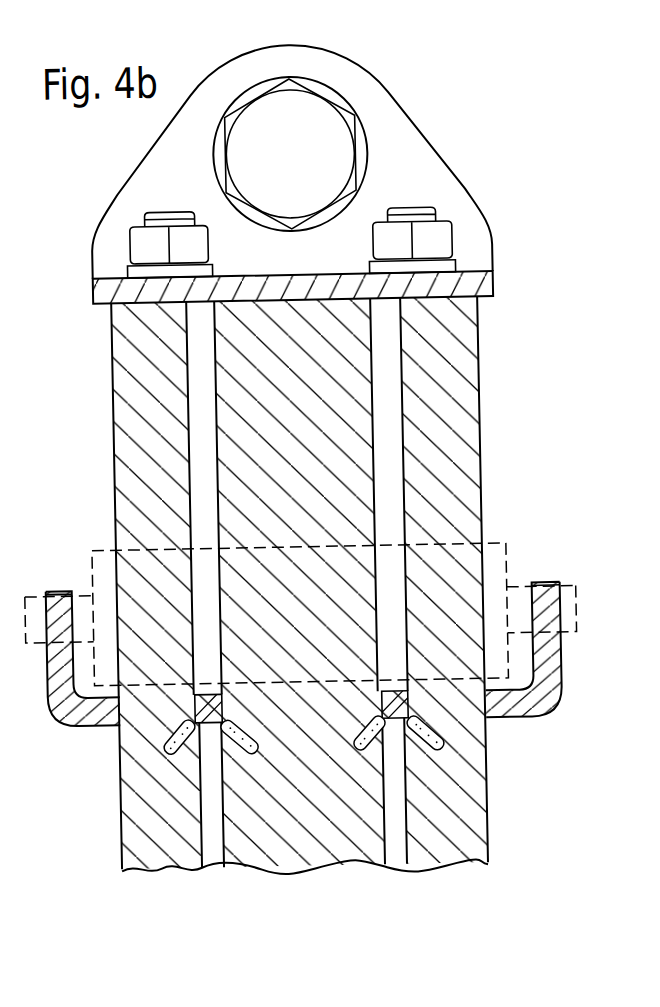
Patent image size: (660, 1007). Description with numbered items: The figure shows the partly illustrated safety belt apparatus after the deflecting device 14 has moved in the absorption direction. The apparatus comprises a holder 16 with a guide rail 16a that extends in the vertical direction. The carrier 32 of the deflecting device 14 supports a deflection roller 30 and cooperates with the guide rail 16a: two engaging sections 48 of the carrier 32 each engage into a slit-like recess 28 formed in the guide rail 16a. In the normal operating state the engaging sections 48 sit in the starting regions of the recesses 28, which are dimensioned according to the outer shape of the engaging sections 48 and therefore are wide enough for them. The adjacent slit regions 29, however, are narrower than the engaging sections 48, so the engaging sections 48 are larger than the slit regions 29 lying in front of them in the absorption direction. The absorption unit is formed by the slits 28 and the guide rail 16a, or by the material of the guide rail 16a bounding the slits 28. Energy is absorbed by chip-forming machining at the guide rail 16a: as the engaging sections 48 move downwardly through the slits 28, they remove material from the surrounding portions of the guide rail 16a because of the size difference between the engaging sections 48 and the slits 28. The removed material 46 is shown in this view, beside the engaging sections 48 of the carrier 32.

The holder 16 is at (392, 122).
The guide rail 16a is at (458, 423).
The slit regions 29 is at (201, 355).
The slit-like recess 28 is at (207, 833).
The engaging sections 48 is at (378, 710).
The removed material 46 is at (222, 756).
The deflection roller 30 is at (491, 561).
The carrier 32 is at (542, 678).
The deflecting device 14 is at (551, 587).